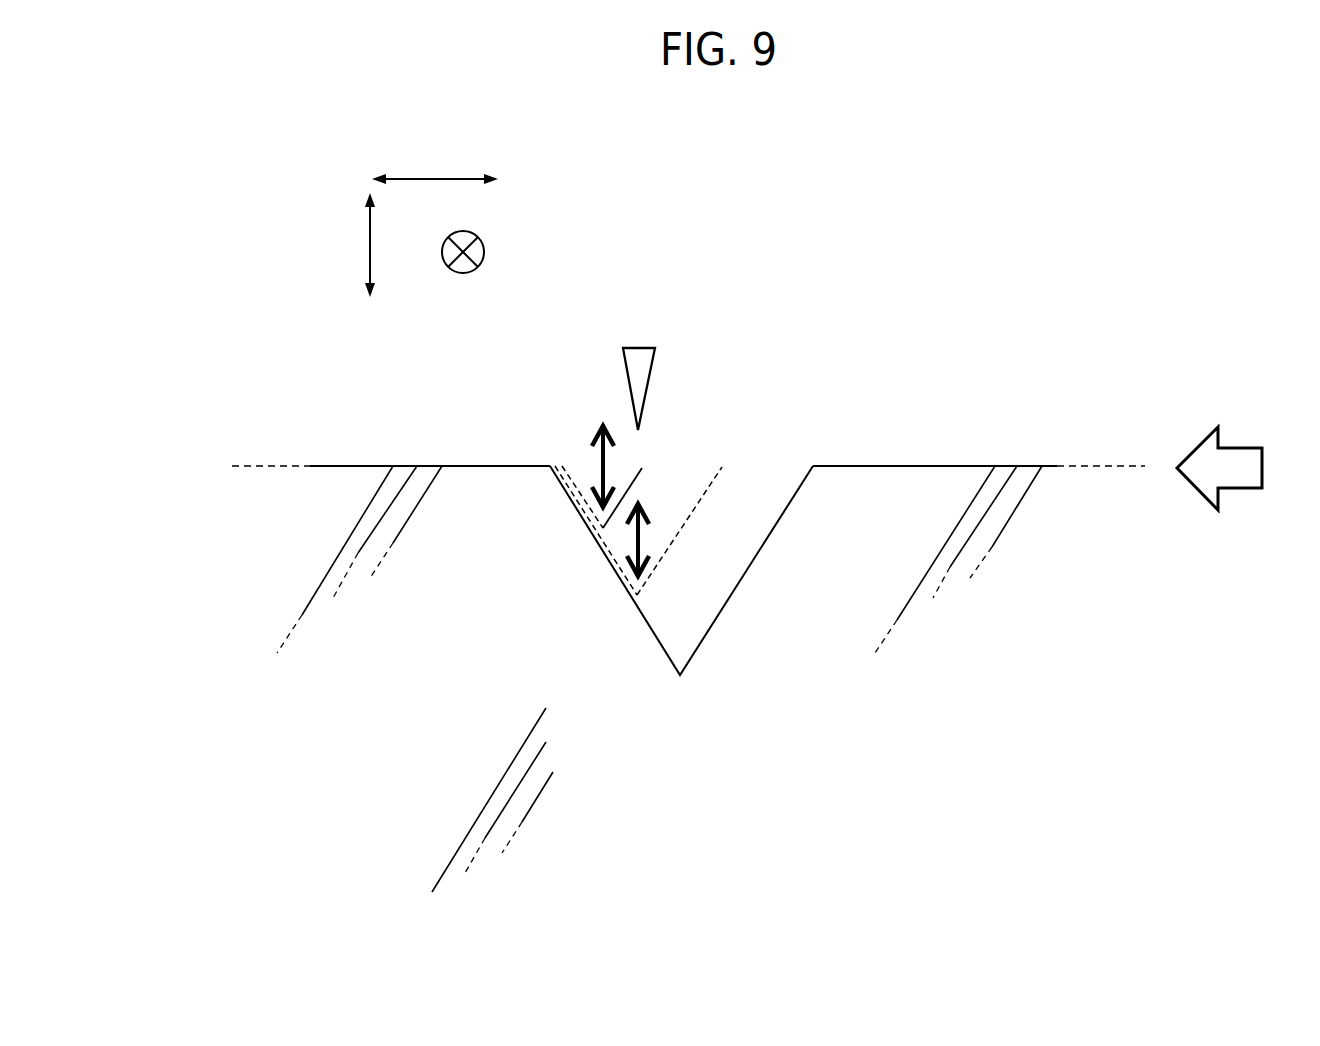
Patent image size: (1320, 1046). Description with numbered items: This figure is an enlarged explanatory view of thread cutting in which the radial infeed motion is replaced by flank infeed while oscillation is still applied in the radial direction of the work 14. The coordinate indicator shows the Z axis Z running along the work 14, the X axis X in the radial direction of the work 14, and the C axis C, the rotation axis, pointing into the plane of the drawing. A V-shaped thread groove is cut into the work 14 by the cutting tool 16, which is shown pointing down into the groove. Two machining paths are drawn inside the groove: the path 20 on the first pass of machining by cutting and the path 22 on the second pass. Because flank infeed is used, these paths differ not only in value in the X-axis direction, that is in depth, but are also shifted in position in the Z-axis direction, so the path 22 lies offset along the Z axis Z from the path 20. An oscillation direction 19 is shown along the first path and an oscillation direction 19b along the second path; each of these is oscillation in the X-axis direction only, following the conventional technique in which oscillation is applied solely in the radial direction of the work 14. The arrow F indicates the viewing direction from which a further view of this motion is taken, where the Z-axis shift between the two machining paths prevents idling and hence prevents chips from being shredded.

The work 14 is at (380, 466).
The cutting tool 16 is at (640, 345).
The oscillation direction 19 is at (600, 470).
The oscillation direction 19b is at (635, 542).
The path on the first path 20 is at (638, 478).
The path on the second path 22 is at (693, 512).
The Z axis Z is at (445, 178).
The X axis X is at (367, 222).
The C axis C is at (486, 252).
The arrow F is at (1198, 442).